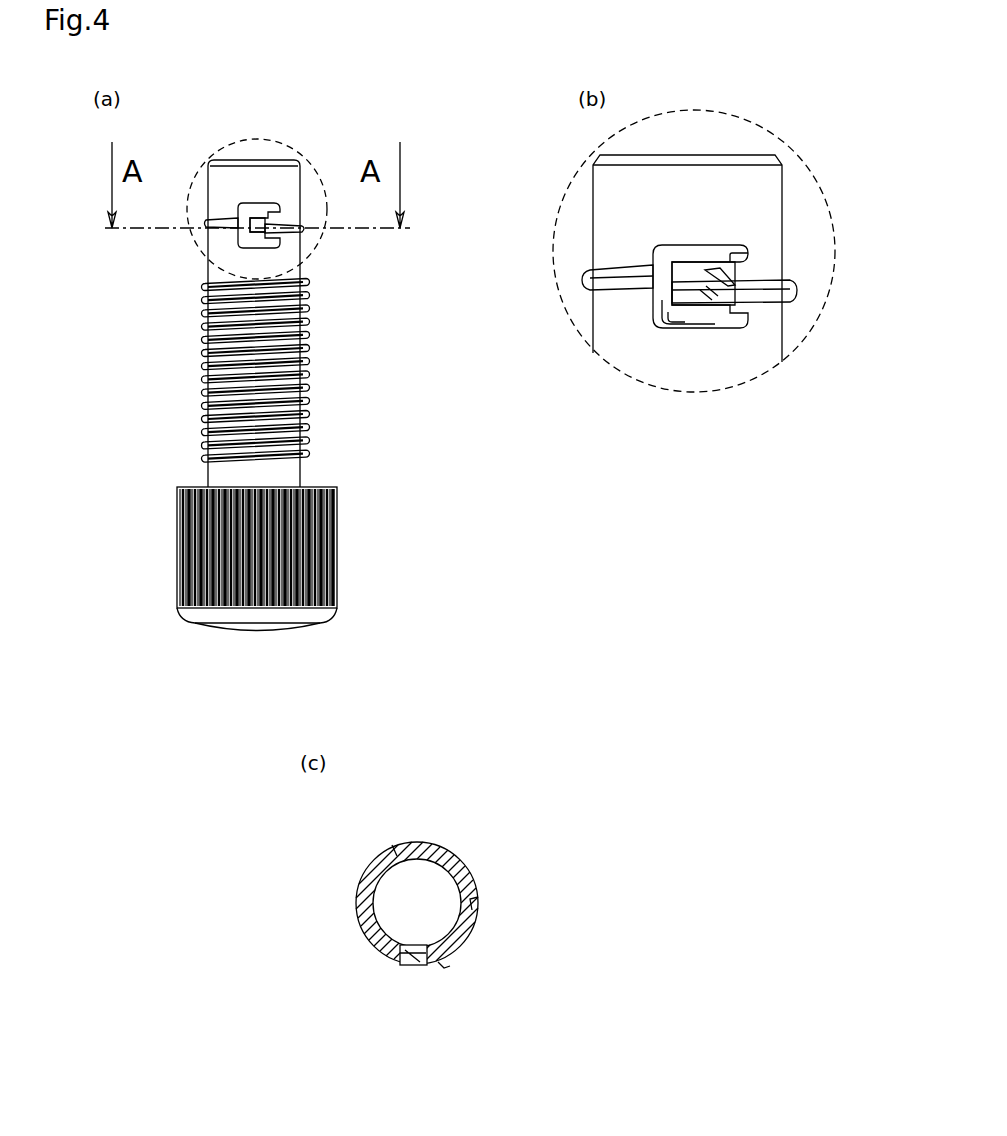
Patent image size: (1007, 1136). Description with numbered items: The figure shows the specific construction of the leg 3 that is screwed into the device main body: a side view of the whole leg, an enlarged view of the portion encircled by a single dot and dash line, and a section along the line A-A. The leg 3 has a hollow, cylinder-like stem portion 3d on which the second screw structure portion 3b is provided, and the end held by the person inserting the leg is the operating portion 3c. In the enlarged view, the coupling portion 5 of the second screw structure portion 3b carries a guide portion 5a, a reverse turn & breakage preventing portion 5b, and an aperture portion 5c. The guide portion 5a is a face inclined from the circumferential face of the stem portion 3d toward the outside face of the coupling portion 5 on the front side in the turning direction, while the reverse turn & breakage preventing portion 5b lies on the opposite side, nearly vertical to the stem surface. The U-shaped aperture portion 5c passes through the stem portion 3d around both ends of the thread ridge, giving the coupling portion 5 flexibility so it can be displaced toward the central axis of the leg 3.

The leg 3 is at (176, 417).
The second screw structure portion 3b is at (200, 246).
The operating portion 3c is at (337, 548).
The stem portion 3d is at (633, 212).
The coupling portion 5 is at (725, 328).
The guide portion 5a is at (735, 282).
The reverse turn & breakage preventing portion 5b is at (670, 303).
The aperture portion 5c is at (708, 330).